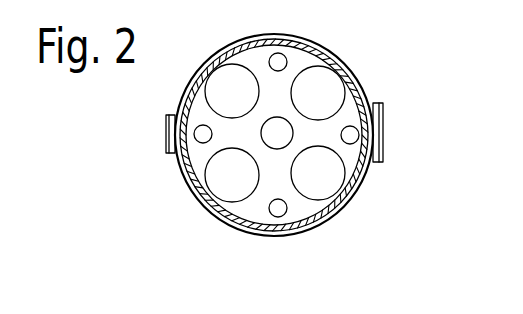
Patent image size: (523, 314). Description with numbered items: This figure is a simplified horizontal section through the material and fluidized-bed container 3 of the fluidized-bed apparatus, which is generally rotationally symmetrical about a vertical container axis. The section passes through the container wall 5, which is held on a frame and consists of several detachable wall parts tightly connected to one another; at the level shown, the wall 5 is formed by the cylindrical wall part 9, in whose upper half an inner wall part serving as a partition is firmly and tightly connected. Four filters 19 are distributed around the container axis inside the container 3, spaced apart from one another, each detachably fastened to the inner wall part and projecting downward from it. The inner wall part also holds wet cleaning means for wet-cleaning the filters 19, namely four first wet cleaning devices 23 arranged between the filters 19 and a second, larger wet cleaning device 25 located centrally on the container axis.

The material and fluidized bed container 3 is at (233, 37).
The wall 5 is at (343, 52).
The cylindrical wall part 9 is at (358, 84).
The filter 19 is at (345, 96).
The first wet cleaning device 23 is at (282, 60).
The second wet cleaning device 25 is at (262, 133).